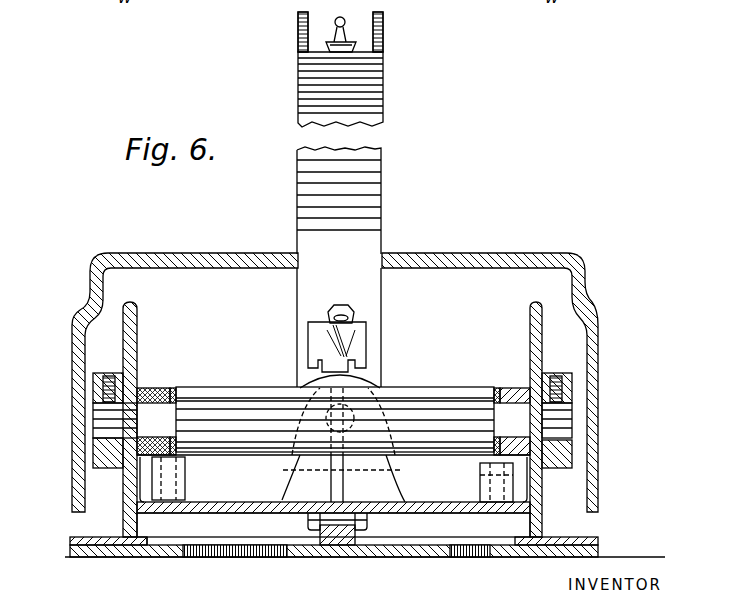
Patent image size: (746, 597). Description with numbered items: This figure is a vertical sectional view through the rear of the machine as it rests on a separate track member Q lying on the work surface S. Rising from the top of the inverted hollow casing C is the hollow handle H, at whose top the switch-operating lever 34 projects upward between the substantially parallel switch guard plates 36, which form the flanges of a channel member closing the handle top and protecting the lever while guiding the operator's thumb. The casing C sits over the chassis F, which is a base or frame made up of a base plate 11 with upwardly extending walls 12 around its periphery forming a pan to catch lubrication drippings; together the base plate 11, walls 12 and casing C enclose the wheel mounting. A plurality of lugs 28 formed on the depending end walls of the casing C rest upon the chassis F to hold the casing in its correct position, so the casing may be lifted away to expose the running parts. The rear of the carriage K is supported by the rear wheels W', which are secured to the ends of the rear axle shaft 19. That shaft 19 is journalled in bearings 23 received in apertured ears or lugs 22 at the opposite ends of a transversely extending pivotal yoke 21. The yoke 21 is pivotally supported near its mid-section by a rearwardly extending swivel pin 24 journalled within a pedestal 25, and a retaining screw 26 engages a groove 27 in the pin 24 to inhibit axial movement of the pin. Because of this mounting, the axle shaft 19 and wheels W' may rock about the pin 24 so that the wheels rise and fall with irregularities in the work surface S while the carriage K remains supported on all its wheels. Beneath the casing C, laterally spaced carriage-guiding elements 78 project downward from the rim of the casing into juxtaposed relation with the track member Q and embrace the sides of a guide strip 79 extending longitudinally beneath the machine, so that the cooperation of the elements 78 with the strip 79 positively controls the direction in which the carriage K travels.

The operating lever 34 is at (345, 19).
The switch guard plates 36 is at (299, 34).
The handle H is at (380, 152).
The carriage K is at (359, 362).
The casing C is at (602, 382).
The walls 12 is at (141, 489).
The rear axle shaft 19 is at (214, 410).
The yoke 21 is at (420, 393).
The swivel pin 24 is at (378, 390).
The lugs 22 is at (158, 388).
The bearings 23 is at (150, 386).
The retaining screw 26 is at (362, 358).
The groove 27 is at (318, 445).
The pedestal 25 is at (388, 489).
The lugs 28 is at (178, 497).
The chassis F is at (208, 502).
The base plate 11 is at (226, 512).
The carriage-guiding elements 78 is at (368, 527).
The guide strip 79 is at (352, 538).
The rear wheels W' is at (332, 529).
The work surface S is at (640, 556).
The track member Q is at (151, 549).